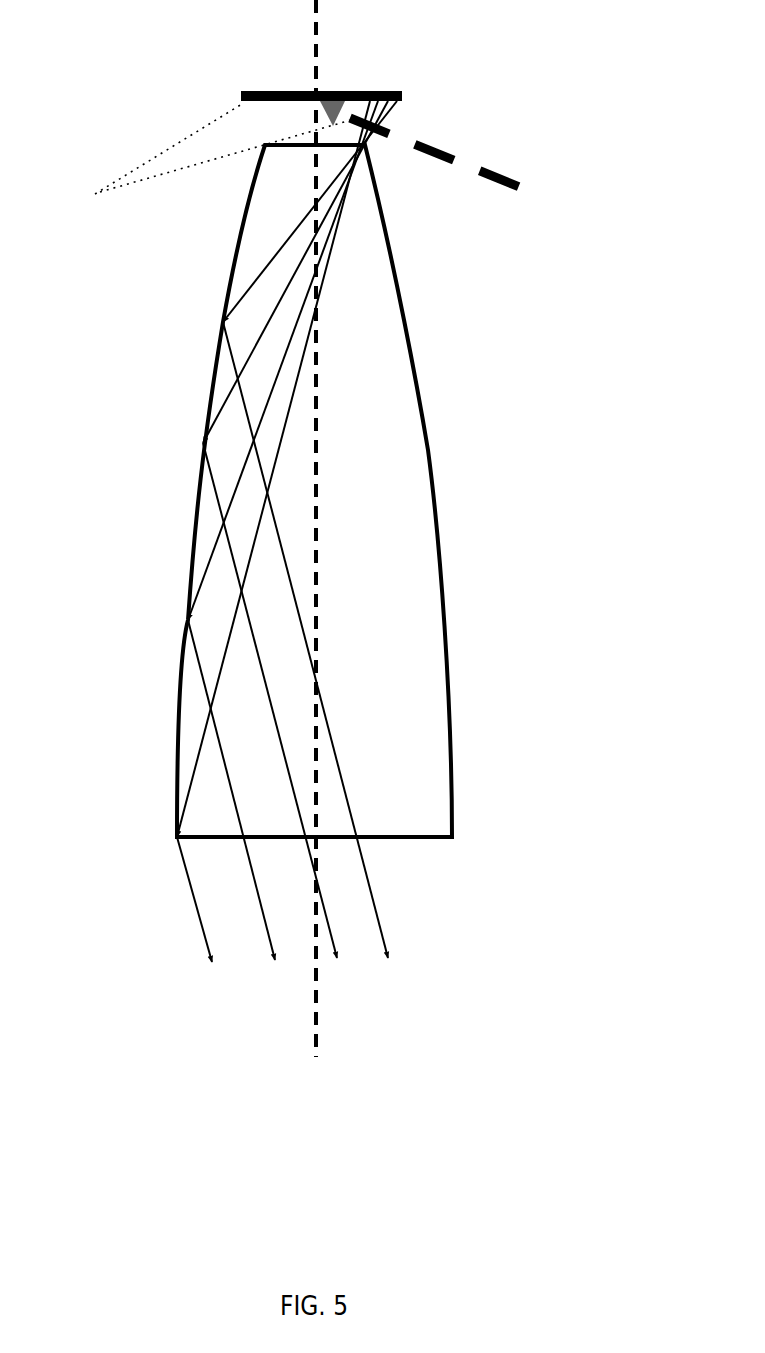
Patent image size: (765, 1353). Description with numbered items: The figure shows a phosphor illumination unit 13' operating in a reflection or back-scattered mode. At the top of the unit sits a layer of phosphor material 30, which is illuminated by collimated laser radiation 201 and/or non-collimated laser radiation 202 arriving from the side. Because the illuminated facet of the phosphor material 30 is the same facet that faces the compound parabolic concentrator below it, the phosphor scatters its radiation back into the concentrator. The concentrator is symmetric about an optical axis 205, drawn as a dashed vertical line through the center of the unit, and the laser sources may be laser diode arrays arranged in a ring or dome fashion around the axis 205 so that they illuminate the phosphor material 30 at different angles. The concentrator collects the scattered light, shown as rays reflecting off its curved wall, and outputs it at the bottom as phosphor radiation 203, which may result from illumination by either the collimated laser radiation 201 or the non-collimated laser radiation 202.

The phosphor illumination unit 13' is at (308, 547).
The phosphor material 30 is at (268, 90).
The collimated laser radiation 201 is at (440, 165).
The non-collimated laser radiation 202 is at (207, 166).
The phosphor radiation 203 is at (263, 943).
The axis 205 is at (313, 1000).